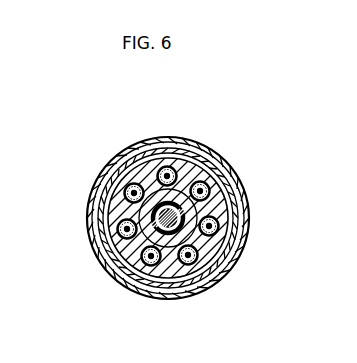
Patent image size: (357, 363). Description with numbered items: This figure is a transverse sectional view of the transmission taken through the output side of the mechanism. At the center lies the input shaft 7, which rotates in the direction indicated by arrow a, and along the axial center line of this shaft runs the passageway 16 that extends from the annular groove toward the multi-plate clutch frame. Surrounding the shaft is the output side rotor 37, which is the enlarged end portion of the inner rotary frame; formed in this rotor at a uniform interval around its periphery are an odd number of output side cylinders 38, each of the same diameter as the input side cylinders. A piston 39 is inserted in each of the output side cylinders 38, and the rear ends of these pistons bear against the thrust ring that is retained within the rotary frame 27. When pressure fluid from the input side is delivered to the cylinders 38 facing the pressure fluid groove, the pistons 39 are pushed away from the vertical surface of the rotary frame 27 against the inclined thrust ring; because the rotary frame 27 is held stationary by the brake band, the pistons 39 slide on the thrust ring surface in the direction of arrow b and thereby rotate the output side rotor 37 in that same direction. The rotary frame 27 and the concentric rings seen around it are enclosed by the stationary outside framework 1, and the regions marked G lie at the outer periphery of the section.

The outside framework 1 is at (211, 147).
The input shaft 7 is at (148, 152).
The passageway 16 is at (186, 160).
The rotary frame 27 is at (230, 164).
The output side rotor 37 is at (242, 194).
The output side cylinders 38 is at (101, 224).
The piston 39 is at (137, 284).
The arrow a is at (241, 212).
The arrow b is at (100, 262).
The gap G is at (106, 172).